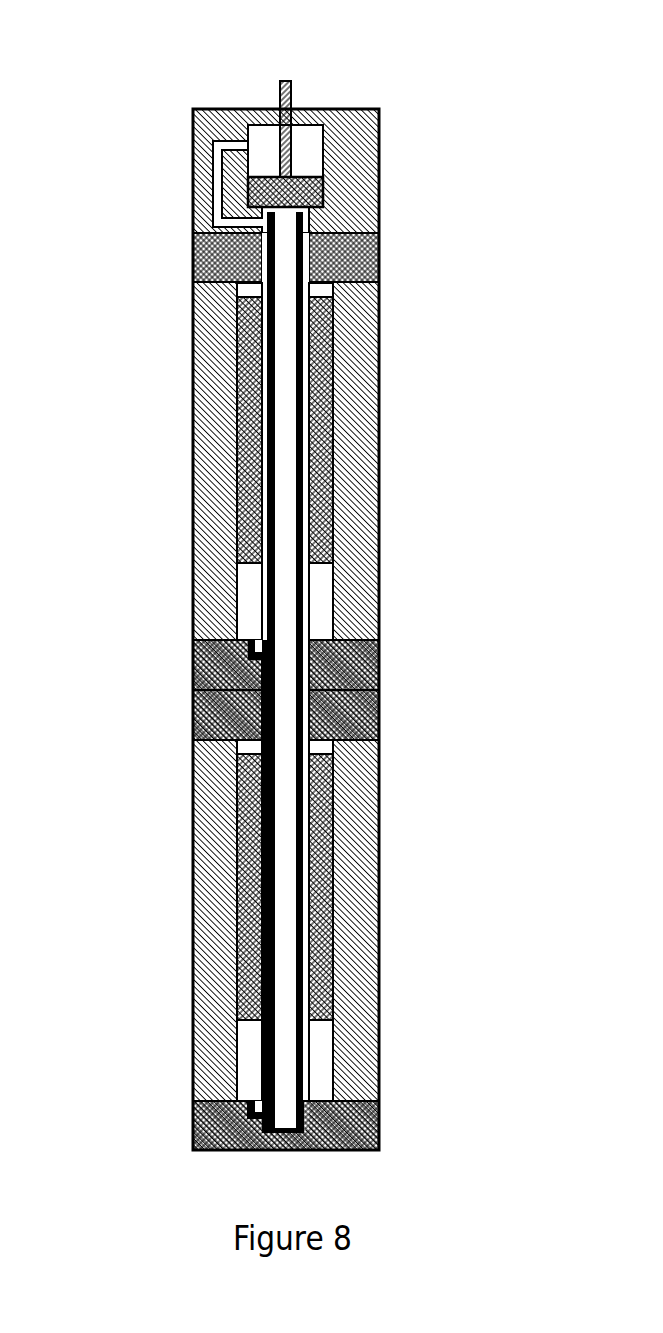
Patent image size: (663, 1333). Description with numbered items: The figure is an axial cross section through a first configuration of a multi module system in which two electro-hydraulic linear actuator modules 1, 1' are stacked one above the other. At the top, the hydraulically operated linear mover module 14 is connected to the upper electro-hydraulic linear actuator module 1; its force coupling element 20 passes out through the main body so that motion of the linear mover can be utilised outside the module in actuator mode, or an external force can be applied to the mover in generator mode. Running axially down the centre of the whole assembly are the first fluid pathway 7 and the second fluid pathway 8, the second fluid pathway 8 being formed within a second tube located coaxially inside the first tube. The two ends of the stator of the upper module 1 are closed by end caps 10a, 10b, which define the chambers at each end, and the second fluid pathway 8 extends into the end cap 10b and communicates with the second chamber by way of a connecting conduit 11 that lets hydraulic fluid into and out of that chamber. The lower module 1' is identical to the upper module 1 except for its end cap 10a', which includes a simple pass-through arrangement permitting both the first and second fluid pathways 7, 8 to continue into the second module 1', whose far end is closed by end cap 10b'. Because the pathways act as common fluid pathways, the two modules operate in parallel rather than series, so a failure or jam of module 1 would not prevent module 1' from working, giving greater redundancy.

The electro-hydraulic linear actuator module 1 is at (274, 461).
The second electro-hydraulic linear actuator module 1' is at (269, 941).
The first fluid pathway 7 is at (305, 582).
The second fluid pathway 8 is at (286, 607).
The end cap 10a is at (399, 292).
The end cap 10b is at (342, 657).
The end cap 10a' is at (403, 749).
The end cap 10b' is at (345, 1114).
The connecting conduit 11 is at (158, 1146).
The hydraulically operated linear mover module 14 is at (132, 114).
The force coupling element 20 is at (290, 80).